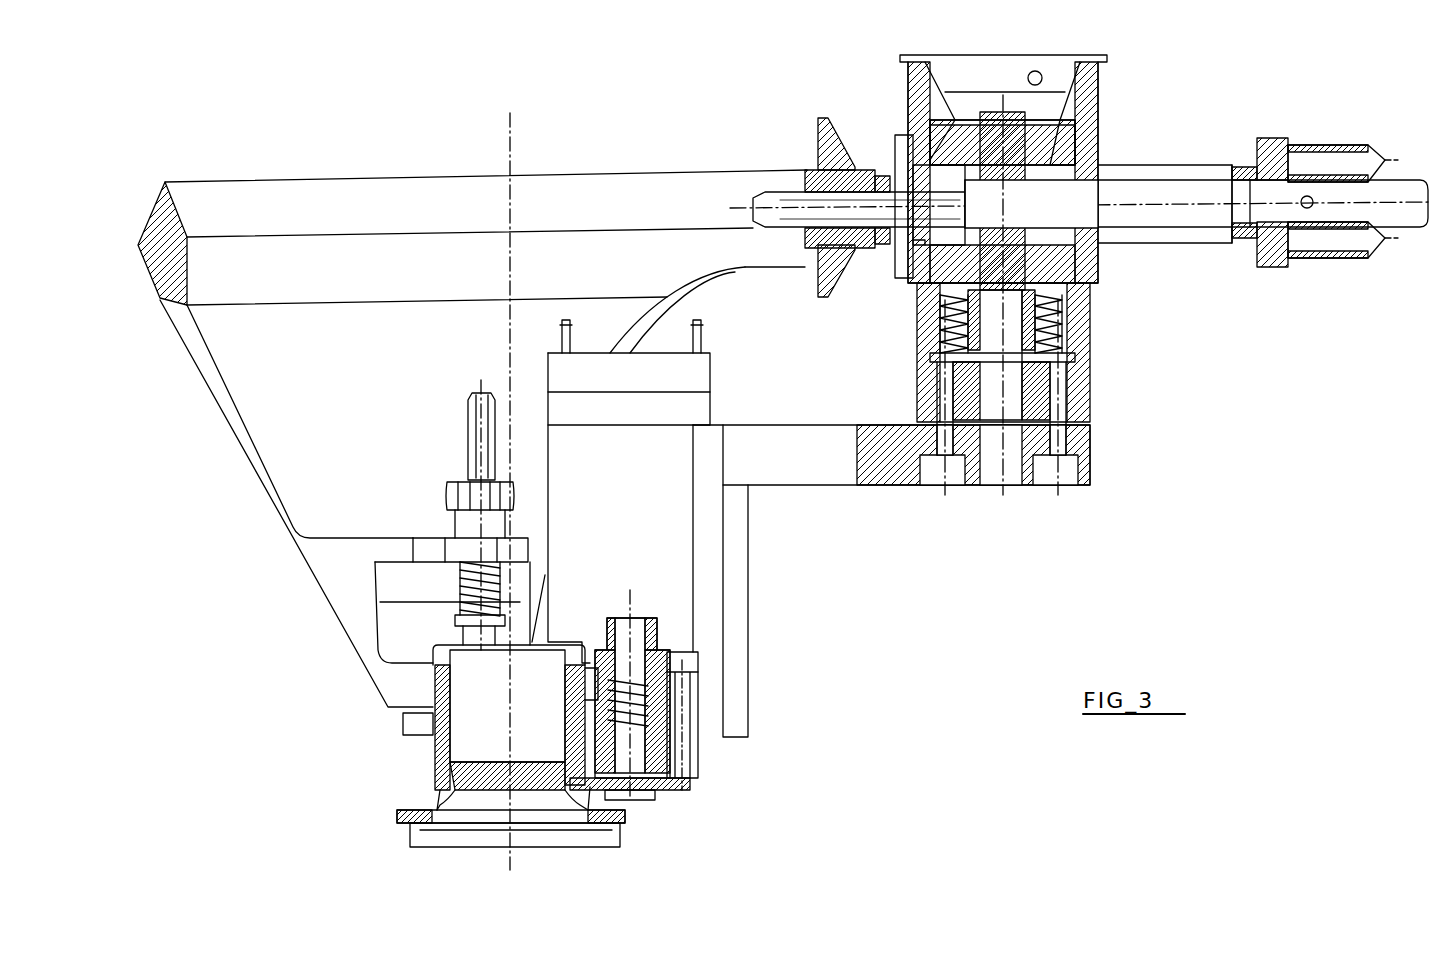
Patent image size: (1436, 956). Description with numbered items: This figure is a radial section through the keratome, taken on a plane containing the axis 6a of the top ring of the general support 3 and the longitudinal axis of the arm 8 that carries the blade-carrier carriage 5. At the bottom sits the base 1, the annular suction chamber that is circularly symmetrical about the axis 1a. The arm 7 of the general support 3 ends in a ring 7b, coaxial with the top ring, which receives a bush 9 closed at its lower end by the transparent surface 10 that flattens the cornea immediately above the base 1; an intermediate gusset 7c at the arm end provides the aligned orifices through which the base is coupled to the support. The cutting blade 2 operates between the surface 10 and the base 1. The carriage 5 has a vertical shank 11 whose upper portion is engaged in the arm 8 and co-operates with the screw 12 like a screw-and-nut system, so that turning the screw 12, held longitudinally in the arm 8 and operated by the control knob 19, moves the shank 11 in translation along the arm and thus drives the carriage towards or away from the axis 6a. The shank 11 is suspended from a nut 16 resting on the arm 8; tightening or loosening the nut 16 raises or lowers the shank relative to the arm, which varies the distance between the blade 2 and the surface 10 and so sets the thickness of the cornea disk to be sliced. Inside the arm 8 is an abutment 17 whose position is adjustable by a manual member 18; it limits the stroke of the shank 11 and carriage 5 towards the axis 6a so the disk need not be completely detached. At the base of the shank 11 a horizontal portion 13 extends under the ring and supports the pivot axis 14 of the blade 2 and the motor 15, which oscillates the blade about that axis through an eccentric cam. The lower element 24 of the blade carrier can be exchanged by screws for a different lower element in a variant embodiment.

The base 1 is at (620, 828).
The axis 1a is at (512, 830).
The cutting blade 2 is at (455, 795).
The general support 3 is at (587, 160).
The blade-carrier carriage 5 is at (797, 505).
The axis 6a is at (528, 124).
The arm 7 is at (258, 448).
The ring 7b is at (433, 683).
The intermediate gusset 7c is at (385, 547).
The arm 8 is at (1205, 165).
The bush 9 is at (435, 745).
The surface 10 is at (500, 795).
The vertical shank 11 is at (1090, 380).
The screw 12 is at (1188, 215).
The horizontal portion 13 is at (802, 445).
The pivot axis 14 is at (632, 620).
The motor 15 is at (695, 370).
The nut 16 is at (985, 65).
The abutment 17 is at (905, 140).
The manual member 18 is at (825, 150).
The control knob 19 is at (1305, 257).
The lower element 24 is at (700, 750).